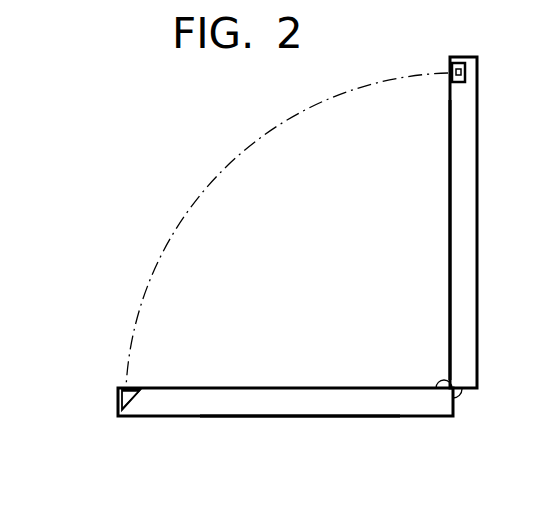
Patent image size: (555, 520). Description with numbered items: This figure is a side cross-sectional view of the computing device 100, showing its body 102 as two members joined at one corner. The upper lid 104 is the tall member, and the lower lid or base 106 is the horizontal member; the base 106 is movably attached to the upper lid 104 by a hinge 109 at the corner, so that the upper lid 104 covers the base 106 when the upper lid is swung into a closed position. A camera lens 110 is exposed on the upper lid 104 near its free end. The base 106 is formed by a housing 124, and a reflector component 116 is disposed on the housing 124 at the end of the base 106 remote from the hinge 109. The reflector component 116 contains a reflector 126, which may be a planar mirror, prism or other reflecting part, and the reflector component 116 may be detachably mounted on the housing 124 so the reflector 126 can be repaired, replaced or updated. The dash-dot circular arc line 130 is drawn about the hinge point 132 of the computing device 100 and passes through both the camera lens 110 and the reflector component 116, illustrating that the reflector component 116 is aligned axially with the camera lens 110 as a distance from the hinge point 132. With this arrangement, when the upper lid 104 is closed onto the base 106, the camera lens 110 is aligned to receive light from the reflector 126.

The computing device 100 is at (152, 160).
The body 102 is at (474, 212).
The upper lid 104 is at (457, 193).
The lower lid (base) 106 is at (379, 388).
The hinge 109 is at (460, 395).
The camera lens 110 is at (452, 60).
The reflector component 116 is at (119, 392).
The housing 124 is at (322, 405).
The reflector 126 is at (128, 396).
The circular arc line 130 is at (162, 233).
The hinge point 132 is at (443, 381).